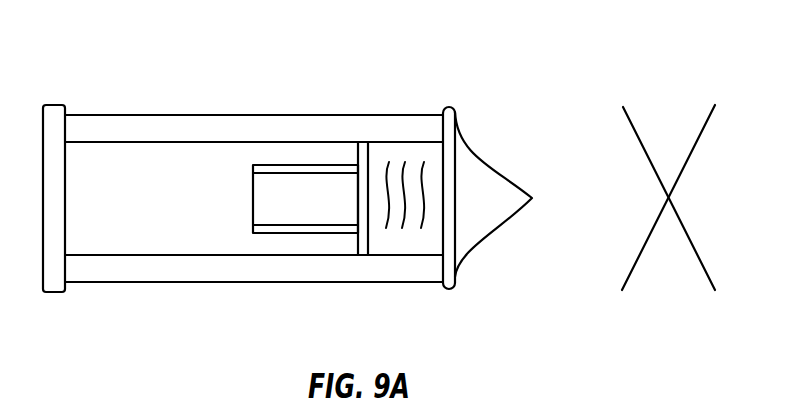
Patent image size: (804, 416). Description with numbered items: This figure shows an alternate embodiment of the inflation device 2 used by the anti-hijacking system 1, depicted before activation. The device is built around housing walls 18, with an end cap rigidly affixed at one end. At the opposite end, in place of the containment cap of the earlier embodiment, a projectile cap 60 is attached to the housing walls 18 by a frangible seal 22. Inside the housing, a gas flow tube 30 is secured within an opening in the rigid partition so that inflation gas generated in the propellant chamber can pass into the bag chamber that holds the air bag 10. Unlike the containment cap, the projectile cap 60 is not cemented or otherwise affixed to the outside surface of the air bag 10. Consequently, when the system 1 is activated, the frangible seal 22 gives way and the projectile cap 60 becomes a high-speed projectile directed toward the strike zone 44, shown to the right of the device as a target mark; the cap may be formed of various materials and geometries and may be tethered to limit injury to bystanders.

The anti-hijacking system 1 is at (488, 78).
The inflation device 2 is at (137, 309).
The air bag 10 is at (432, 150).
The housing walls 18 is at (248, 123).
The frangible seal 22 is at (453, 268).
The gas flow tube 30 is at (316, 213).
The strike zone 44 is at (696, 180).
The projectile cap 60 is at (494, 213).